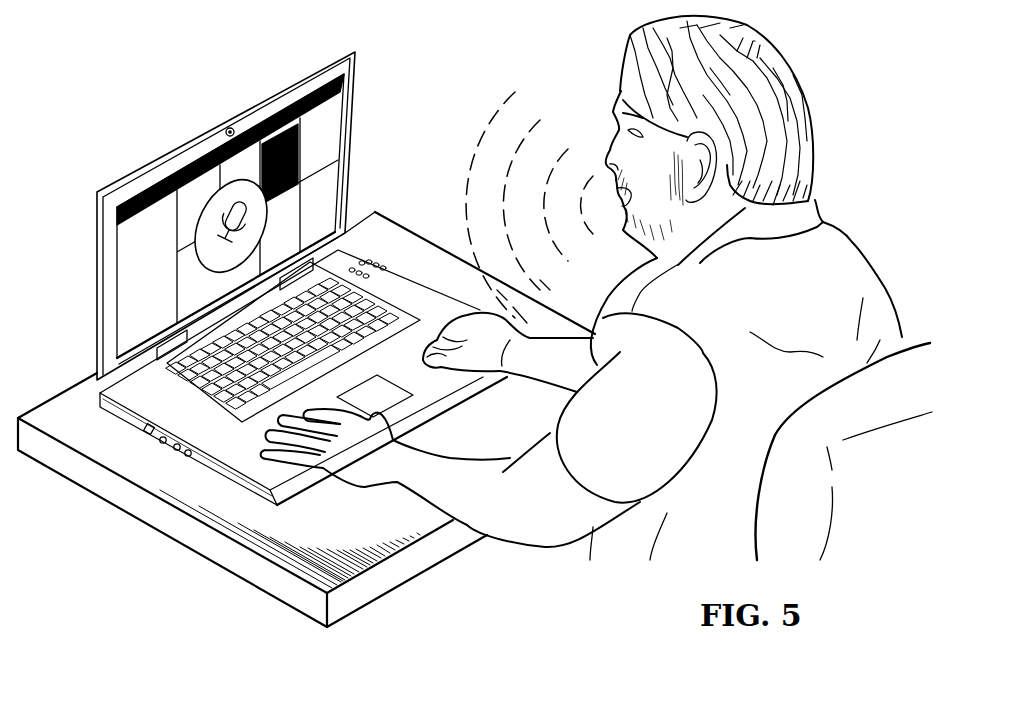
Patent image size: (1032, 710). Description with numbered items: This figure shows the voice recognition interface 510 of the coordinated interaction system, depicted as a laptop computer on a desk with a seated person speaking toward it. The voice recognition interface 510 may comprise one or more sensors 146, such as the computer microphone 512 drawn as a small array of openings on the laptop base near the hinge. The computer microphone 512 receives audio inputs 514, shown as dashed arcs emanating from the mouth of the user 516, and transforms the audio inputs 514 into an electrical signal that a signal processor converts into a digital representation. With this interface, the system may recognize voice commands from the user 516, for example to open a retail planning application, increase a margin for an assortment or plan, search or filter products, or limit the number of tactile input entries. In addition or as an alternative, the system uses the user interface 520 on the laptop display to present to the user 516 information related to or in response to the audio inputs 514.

The voice recognition interface 510 is at (297, 263).
The user interface 520 is at (280, 148).
The computer microphone 512 is at (365, 258).
The sensors 146 is at (383, 273).
The audio inputs 514 is at (477, 145).
The user 516 is at (813, 100).